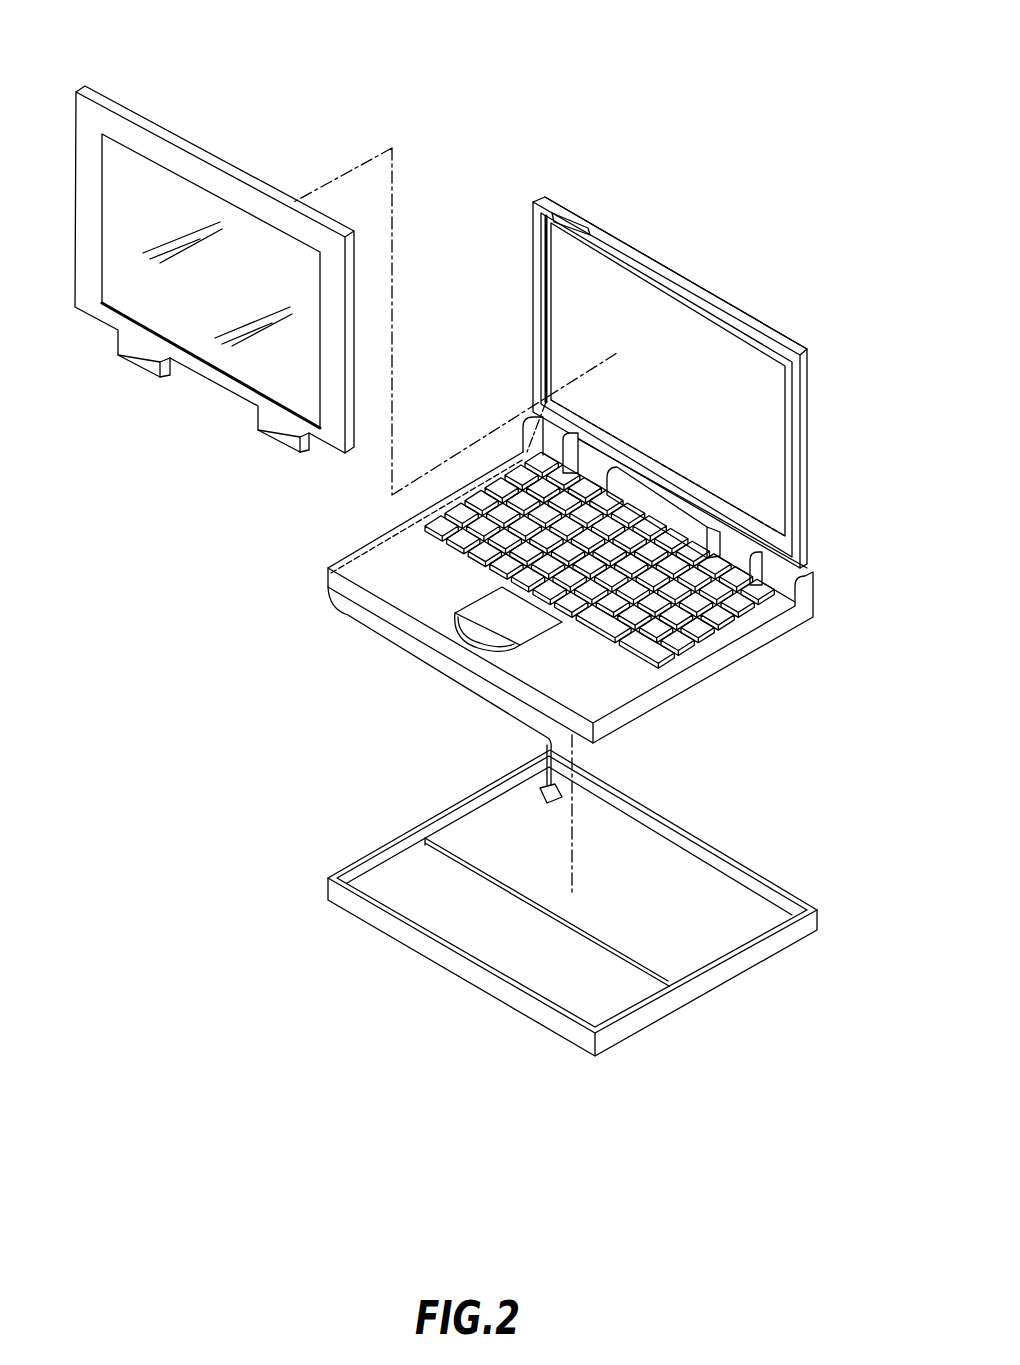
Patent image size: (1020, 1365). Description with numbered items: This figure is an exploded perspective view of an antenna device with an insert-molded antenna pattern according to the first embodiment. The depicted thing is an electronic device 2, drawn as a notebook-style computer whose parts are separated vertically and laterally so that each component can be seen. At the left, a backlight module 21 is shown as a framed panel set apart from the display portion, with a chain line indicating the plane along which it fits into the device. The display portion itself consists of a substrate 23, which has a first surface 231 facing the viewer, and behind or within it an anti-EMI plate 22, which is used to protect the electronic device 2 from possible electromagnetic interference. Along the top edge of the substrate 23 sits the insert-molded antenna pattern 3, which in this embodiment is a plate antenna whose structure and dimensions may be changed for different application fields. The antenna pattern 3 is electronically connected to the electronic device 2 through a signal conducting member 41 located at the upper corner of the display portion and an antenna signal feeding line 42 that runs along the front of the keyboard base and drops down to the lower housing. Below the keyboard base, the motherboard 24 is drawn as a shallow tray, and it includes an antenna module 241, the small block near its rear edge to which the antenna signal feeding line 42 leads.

The electronic device 2 is at (663, 97).
The backlight module 21 is at (232, 360).
The anti-EMI plate 22 is at (781, 453).
The substrate 23 is at (804, 406).
The first surface 231 is at (678, 280).
The motherboard 24 is at (733, 887).
The antenna module 241 is at (541, 786).
The insert-molded antenna pattern 3 is at (582, 215).
The signal conducting member 41 is at (540, 208).
The antenna signal feeding line 42 is at (380, 642).